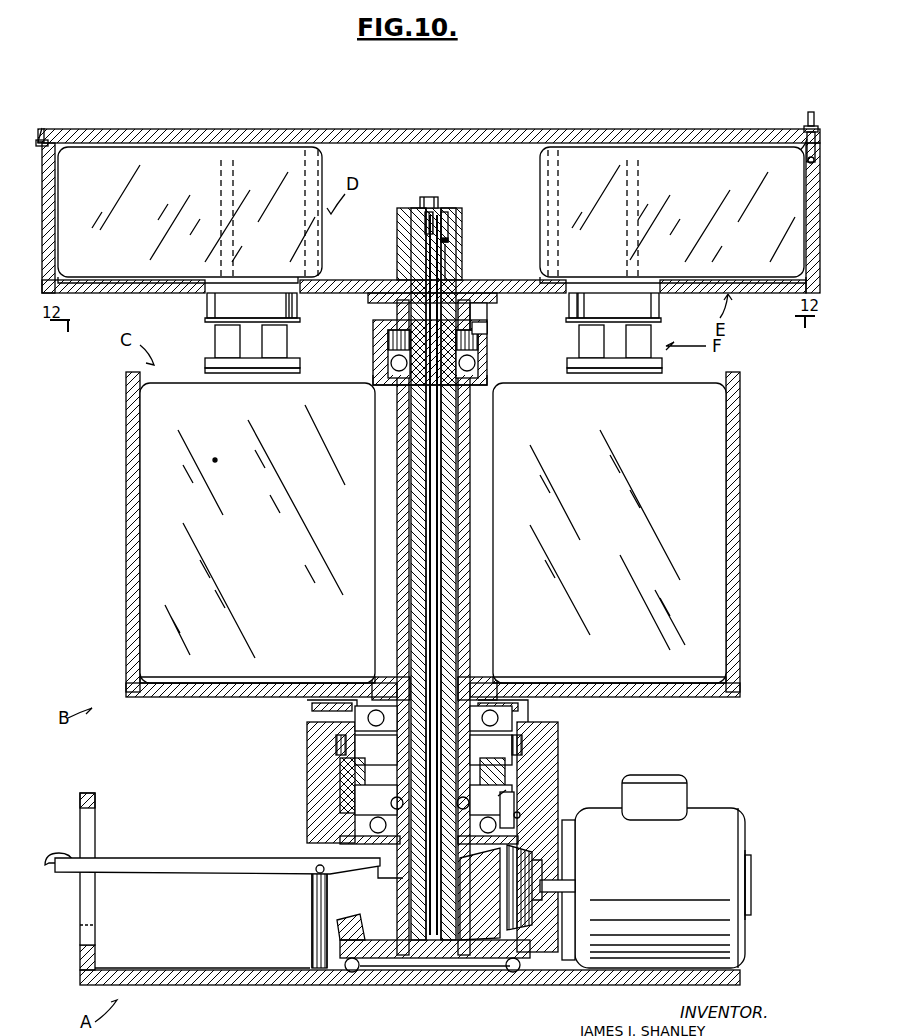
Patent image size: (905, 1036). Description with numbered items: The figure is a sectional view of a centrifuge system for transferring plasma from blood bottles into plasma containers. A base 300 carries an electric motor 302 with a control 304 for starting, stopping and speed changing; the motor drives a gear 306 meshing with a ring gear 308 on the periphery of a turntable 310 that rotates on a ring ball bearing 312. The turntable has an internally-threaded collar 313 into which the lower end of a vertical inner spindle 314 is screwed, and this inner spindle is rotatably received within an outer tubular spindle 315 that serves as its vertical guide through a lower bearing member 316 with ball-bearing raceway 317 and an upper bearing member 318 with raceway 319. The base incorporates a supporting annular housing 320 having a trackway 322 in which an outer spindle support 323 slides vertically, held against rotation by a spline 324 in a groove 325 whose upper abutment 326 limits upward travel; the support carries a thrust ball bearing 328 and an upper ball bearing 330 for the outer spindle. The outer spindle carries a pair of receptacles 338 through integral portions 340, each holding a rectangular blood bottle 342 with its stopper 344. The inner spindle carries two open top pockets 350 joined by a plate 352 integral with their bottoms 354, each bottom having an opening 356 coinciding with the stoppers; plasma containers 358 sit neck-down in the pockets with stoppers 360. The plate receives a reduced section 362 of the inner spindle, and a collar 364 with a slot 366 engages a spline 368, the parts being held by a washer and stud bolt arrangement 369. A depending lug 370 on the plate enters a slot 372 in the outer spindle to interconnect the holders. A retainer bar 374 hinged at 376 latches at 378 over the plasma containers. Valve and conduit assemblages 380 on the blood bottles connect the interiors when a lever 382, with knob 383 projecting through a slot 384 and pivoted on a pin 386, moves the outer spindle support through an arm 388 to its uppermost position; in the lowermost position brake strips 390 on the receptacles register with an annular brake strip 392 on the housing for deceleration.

The base 300 is at (234, 982).
The electric motor 302 is at (708, 814).
The control 304 is at (664, 778).
The gear 306 is at (545, 886).
The ring gear 308 is at (533, 932).
The turntable 310 is at (410, 964).
The ring ball bearing 312 is at (512, 972).
The internally-threaded collar 313 is at (480, 909).
The inner spindle 314 is at (452, 550).
The outer tubular spindle 315 is at (460, 594).
The bearing member 316 is at (503, 793).
The ball-bearing raceway 317 is at (495, 802).
The bearing member 318 is at (374, 357).
The ball-bearing raceway 319 is at (515, 372).
The supporting annular housing 320 is at (557, 740).
The trackway 322 is at (520, 815).
The outer spindle support 323 is at (350, 768).
The spline 324 is at (350, 811).
The groove 325 is at (335, 746).
The abutment 326 is at (352, 738).
The combination horizontal and vertical thrust ball bearing 328 is at (370, 820).
The upper ball bearing 330 is at (360, 718).
The receptacles 338 is at (125, 383).
The integrally cast portions 340 is at (372, 674).
The blood bottle 342 is at (433, 533).
The stopper 344 is at (204, 363).
The open top pockets 350 is at (133, 291).
The plate 352 is at (340, 280).
The bottoms 354 is at (86, 291).
The opening 356 is at (205, 303).
The plasma containers 358 is at (431, 212).
The stoppers 360 is at (286, 320).
The reduced section 362 is at (452, 257).
The collar 364 is at (408, 258).
The slot 366 is at (448, 239).
The spline 368 is at (434, 224).
The washer and stud bolt arrangement 369 is at (436, 197).
The lug 370 is at (469, 323).
The slot 372 is at (475, 339).
The retainer bar 374 is at (475, 118).
The hinge 376 is at (40, 142).
The latch 378 is at (804, 127).
The combination valve and conduit assemblages 380 is at (220, 332).
The lever 382 is at (260, 877).
The hand-operable knob 383 is at (56, 846).
The slot 384 is at (94, 838).
The pin 386 is at (324, 870).
The arm 388 is at (378, 864).
The segmental strip of brake material 390 is at (320, 684).
The annular strip of brake material 392 is at (533, 712).